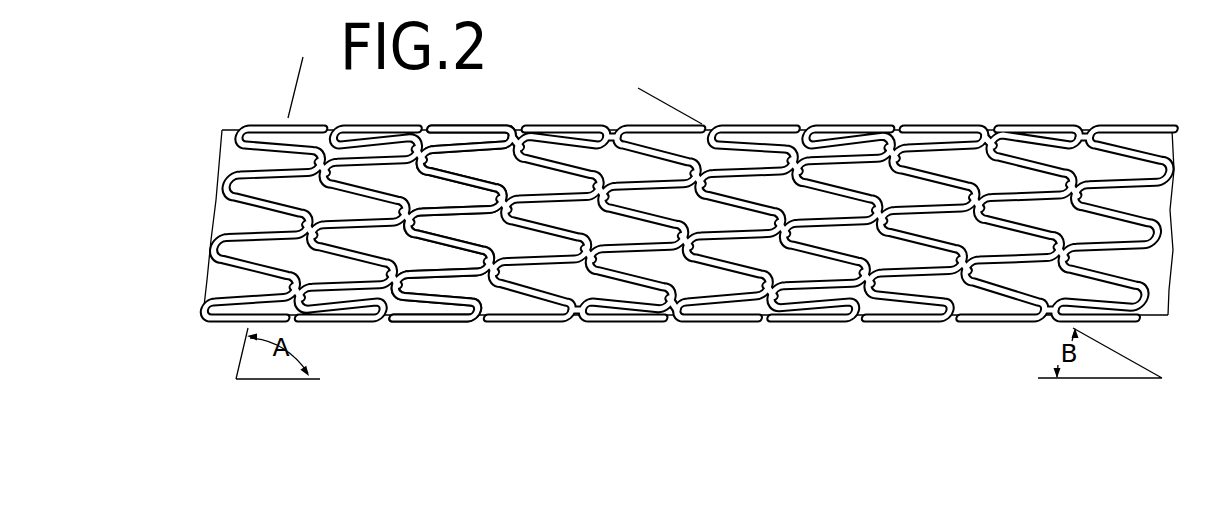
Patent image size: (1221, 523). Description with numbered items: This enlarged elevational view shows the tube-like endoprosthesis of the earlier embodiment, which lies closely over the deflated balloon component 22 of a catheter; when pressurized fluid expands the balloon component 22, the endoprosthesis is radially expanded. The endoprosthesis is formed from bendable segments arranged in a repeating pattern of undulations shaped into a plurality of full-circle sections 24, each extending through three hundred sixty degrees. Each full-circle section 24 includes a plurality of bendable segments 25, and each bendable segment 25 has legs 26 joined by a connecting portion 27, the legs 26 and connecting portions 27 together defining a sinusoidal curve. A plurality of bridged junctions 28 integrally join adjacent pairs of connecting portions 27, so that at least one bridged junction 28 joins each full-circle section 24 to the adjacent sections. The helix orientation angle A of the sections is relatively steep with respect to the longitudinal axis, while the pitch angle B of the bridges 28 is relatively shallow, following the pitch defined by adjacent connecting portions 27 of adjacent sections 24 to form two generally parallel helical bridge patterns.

The balloon component 22 is at (1113, 138).
The full-circle section 24 is at (933, 121).
The bendable segment 25 is at (413, 316).
The leg 26 is at (488, 162).
The connecting portion 27 is at (433, 160).
The bridged junction 28 is at (793, 152).